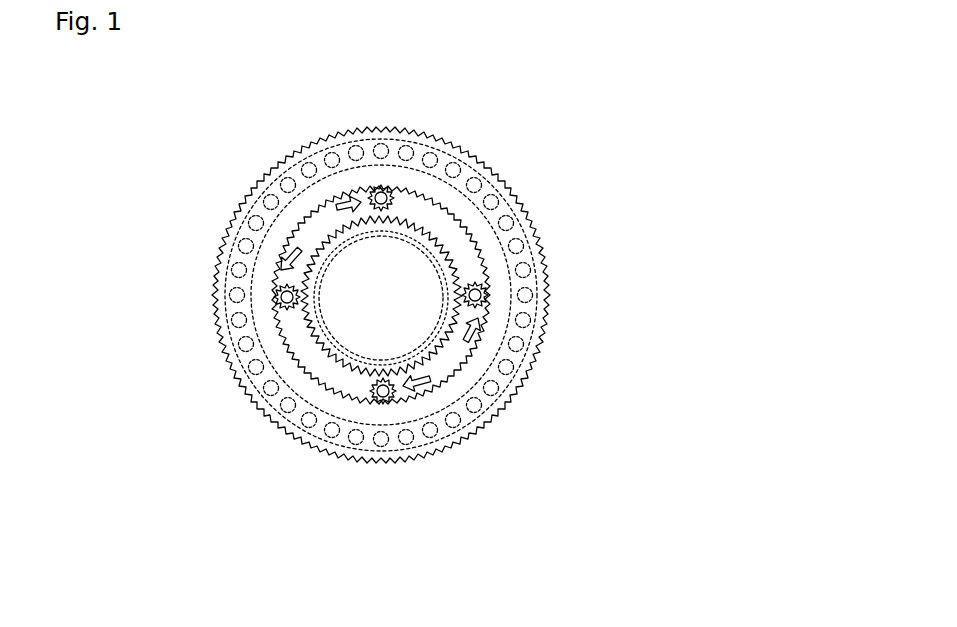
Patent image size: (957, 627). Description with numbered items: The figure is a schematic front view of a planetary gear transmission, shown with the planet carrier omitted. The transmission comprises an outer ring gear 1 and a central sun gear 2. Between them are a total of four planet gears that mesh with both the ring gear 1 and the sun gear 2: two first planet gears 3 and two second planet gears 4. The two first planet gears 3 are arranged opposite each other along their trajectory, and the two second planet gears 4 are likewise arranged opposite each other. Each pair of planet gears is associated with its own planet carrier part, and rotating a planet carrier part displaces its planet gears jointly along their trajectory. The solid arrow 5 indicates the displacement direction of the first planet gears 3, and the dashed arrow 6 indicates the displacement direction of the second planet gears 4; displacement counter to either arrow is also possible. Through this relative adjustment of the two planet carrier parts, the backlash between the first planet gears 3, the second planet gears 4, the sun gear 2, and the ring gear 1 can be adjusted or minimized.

The ring gear 1 is at (472, 216).
The sun gear 2 is at (432, 347).
The first planet gears 3 is at (380, 197).
The second planet gears 4 is at (280, 297).
The solid arrow 5 is at (336, 206).
The dashed arrow 6 is at (291, 250).